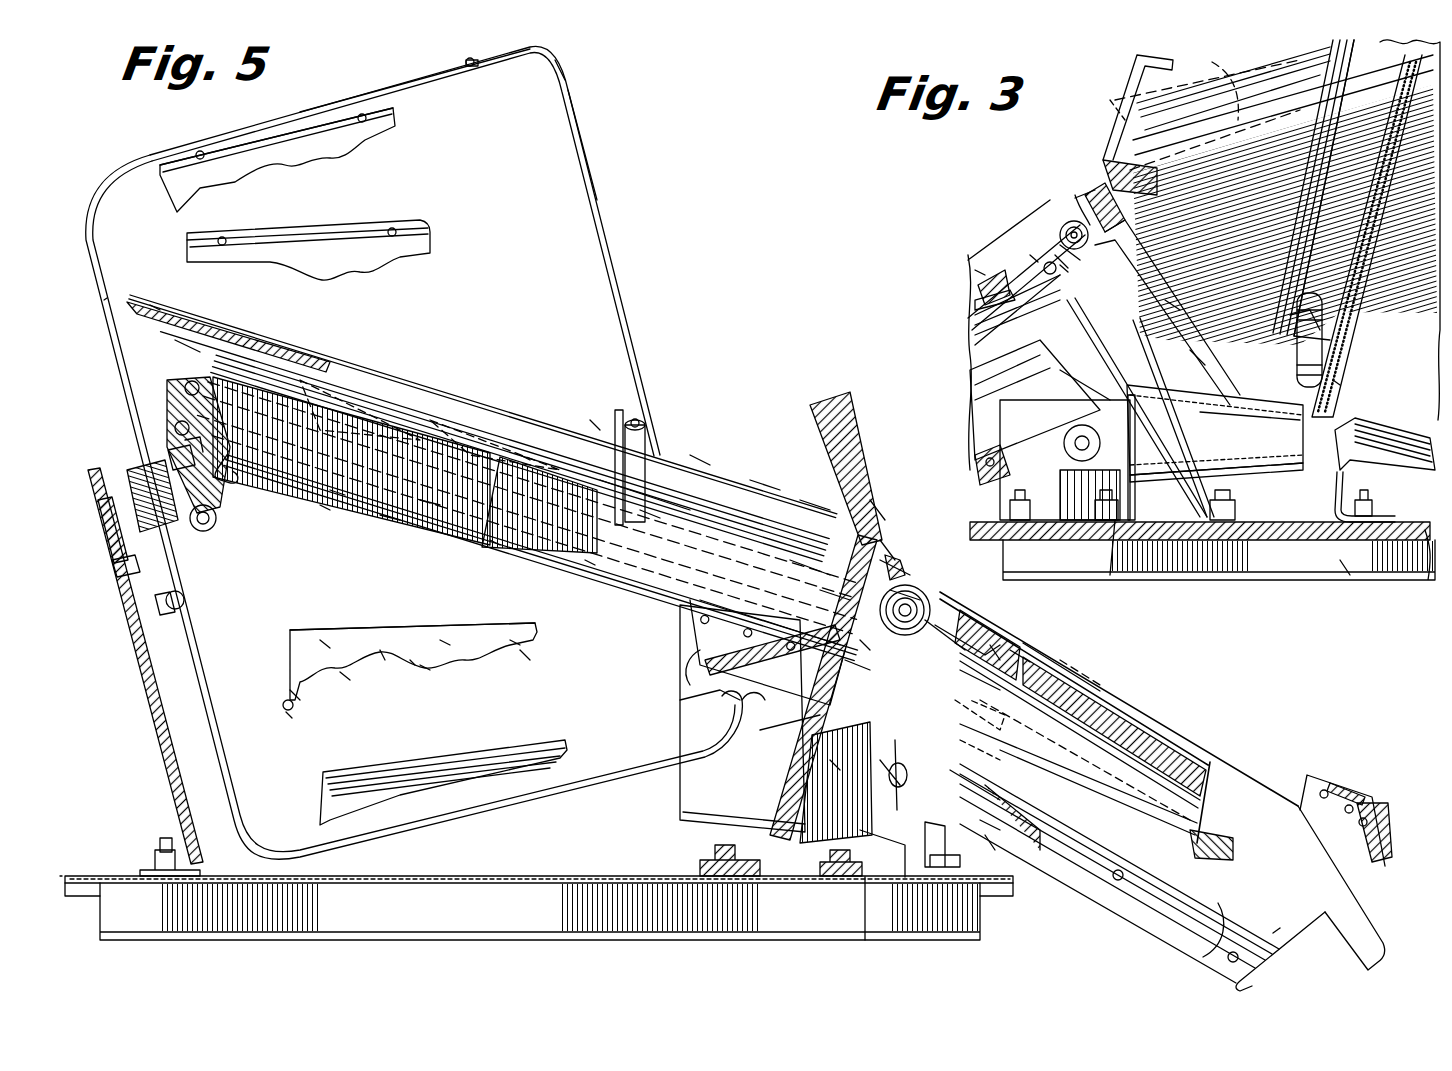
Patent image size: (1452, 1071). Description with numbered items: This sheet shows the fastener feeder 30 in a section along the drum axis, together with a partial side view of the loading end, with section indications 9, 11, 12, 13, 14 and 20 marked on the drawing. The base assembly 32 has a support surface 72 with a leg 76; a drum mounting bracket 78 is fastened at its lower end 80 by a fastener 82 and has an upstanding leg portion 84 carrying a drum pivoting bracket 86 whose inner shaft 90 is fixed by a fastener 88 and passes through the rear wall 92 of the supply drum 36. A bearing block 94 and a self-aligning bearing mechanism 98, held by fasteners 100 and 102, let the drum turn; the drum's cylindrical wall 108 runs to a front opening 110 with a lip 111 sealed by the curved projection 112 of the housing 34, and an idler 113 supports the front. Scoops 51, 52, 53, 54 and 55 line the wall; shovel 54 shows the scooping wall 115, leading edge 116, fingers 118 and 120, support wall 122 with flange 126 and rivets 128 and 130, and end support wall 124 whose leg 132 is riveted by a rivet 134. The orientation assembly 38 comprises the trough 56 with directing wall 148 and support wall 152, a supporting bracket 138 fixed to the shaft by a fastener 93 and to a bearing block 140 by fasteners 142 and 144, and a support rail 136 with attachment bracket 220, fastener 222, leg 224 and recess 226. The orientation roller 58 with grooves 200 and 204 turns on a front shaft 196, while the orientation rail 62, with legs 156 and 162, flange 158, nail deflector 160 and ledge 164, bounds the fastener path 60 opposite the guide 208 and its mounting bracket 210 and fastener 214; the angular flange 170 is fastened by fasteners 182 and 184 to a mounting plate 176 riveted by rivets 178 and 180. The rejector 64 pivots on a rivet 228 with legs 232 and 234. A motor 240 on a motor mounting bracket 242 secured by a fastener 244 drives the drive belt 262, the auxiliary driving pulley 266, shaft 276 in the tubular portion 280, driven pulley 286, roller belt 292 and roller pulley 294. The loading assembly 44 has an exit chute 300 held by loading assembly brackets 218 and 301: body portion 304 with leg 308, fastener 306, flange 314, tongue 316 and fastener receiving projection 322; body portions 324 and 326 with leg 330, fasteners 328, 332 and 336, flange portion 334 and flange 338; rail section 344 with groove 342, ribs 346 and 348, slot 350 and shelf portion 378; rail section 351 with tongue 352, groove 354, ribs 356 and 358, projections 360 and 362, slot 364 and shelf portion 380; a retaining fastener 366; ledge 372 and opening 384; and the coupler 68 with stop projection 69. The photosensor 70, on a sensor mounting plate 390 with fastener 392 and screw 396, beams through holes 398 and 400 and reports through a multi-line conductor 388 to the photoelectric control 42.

In FIG. 5, the section line 9 is at (300, 303).
In FIG. 5, the section line 11 is at (818, 474).
In FIG. 5, the section line 12 is at (700, 470).
In FIG. 5, the section line 13 is at (1025, 624).
In FIG. 5, the section line 14 is at (680, 565).
In FIG. 5, the section line 20 is at (126, 260).
In FIG. 5, the feeder 30 is at (660, 152).
In FIG. 5, the base assembly 32 is at (96, 862).
In FIG. 3, the base assembly 32 is at (1340, 595).
In FIG. 5, the housing 34 is at (840, 400).
In FIG. 3, the housing 34 is at (1137, 52).
In FIG. 5, the supply drum 36 is at (388, 88).
In FIG. 3, the supply drum 36 is at (1395, 58).
In FIG. 5, the orientation assembly 38 is at (512, 312).
In FIG. 3, the orientation assembly 38 is at (1302, 52).
In FIG. 5, the photoelectric control 42 is at (705, 830).
In FIG. 3, the photoelectric control 42 is at (1275, 470).
In FIG. 5, the loading assembly 44 is at (1230, 718).
In FIG. 3, the loading assembly 44 is at (974, 188).
In FIG. 5, the scoop 51 is at (368, 160).
In FIG. 5, the scoop 52 is at (415, 262).
In FIG. 5, the scoop 53 is at (290, 510).
In FIG. 5, the shovel 54 is at (402, 605).
In FIG. 5, the scoop 55 is at (420, 755).
In FIG. 5, the trough 56 is at (120, 313).
In FIG. 5, the orientation roller 58 is at (755, 470).
In FIG. 3, the orientation roller 58 is at (1212, 62).
In FIG. 5, the fastener path 60 is at (386, 461).
In FIG. 5, the orientation rail 62 is at (495, 450).
In FIG. 5, the rejector 64 is at (660, 450).
In FIG. 5, the coupler 68 is at (1348, 786).
In FIG. 5, the stop projection 69 is at (1392, 805).
In FIG. 5, the photosensor 70 is at (918, 605).
In FIG. 3, the photosensor 70 is at (1068, 222).
In FIG. 5, the support surface 72 is at (252, 875).
In FIG. 3, the support surface 72 is at (1405, 575).
In FIG. 5, the leg 76 is at (615, 933).
In FIG. 3, the leg 76 is at (1330, 572).
In FIG. 5, the drum mounting bracket 78 is at (155, 752).
In FIG. 5, the lower end 80 is at (150, 870).
In FIG. 5, the fastener 82 is at (162, 838).
In FIG. 5, the upstanding leg portion 84 is at (160, 720).
In FIG. 5, the drum pivoting bracket 86 is at (98, 462).
In FIG. 5, the fastener 88 is at (98, 535).
In FIG. 5, the inner shaft 90 is at (195, 532).
In FIG. 5, the rear wall 92 is at (215, 712).
In FIG. 5, the fastener 93 is at (222, 538).
In FIG. 5, the bearing block 94 is at (115, 570).
In FIG. 5, the self-aligning bearing mechanism 98 is at (127, 488).
In FIG. 5, the fastener 100 is at (165, 450).
In FIG. 5, the fastener 102 is at (158, 615).
In FIG. 5, the cylindrical wall 108 is at (545, 812).
In FIG. 3, the cylindrical wall 108 is at (1310, 440).
In FIG. 5, the opening 110 is at (583, 112).
In FIG. 5, the lip 111 is at (576, 85).
In FIG. 5, the curved projection 112 is at (690, 695).
In FIG. 3, the idler 113 is at (1250, 413).
In FIG. 5, the scooping wall 115 is at (385, 655).
In FIG. 5, the leading edge 116 is at (418, 660).
In FIG. 5, the finger 118 is at (350, 685).
In FIG. 5, the finger 120 is at (450, 660).
In FIG. 5, the support wall 122 is at (520, 650).
In FIG. 5, the end support wall 124 is at (290, 675).
In FIG. 5, the flange 126 is at (445, 630).
In FIG. 5, the rivet 128 is at (328, 630).
In FIG. 5, the rivet 130 is at (500, 628).
In FIG. 5, the leg 132 is at (290, 712).
In FIG. 5, the rivet 134 is at (283, 706).
In FIG. 5, the support rail 136 is at (418, 355).
In FIG. 3, the support rail 136 is at (1272, 75).
In FIG. 5, the supporting bracket 138 is at (225, 508).
In FIG. 5, the bearing block 140 is at (165, 300).
In FIG. 5, the fastener 142 is at (185, 386).
In FIG. 5, the fastener 144 is at (175, 428).
In FIG. 5, the directing wall 148 is at (148, 322).
In FIG. 5, the support wall 152 is at (425, 500).
In FIG. 5, the leg 156 is at (390, 515).
In FIG. 5, the flange 158 is at (695, 635).
In FIG. 5, the nail deflector 160 is at (690, 670).
In FIG. 5, the leg 162 is at (515, 540).
In FIG. 5, the ledge 164 is at (540, 450).
In FIG. 5, the angular flange 170 is at (830, 582).
In FIG. 5, the mounting plate 176 is at (800, 648).
In FIG. 5, the rivet 178 is at (830, 500).
In FIG. 5, the rivet 180 is at (760, 725).
In FIG. 5, the fastener 182 is at (790, 560).
In FIG. 5, the fastener 184 is at (745, 605).
In FIG. 5, the front shaft 196 is at (890, 560).
In FIG. 3, the front shaft 196 is at (1072, 198).
In FIG. 3, the groove 200 is at (1335, 118).
In FIG. 5, the groove 204 is at (588, 560).
In FIG. 5, the guide 208 is at (330, 485).
In FIG. 3, the guide 208 is at (1290, 330).
In FIG. 3, the mounting bracket 210 is at (1170, 300).
In FIG. 3, the fastener 214 is at (1290, 300).
In FIG. 3, the loading assembly bracket 218 is at (1115, 575).
In FIG. 5, the attachment bracket 220 is at (875, 500).
In FIG. 3, the attachment bracket 220 is at (1120, 120).
In FIG. 3, the fastener 222 is at (1215, 170).
In FIG. 5, the leg 224 is at (560, 420).
In FIG. 5, the recess 226 is at (705, 450).
In FIG. 3, the recess 226 is at (1338, 88).
In FIG. 5, the rivet 228 is at (640, 418).
In FIG. 5, the leg 232 is at (655, 515).
In FIG. 5, the projecting leg 234 is at (612, 405).
In FIG. 3, the motor 240 is at (1425, 468).
In FIG. 3, the motor mounting bracket 242 is at (1335, 485).
In FIG. 3, the fastener 244 is at (1360, 493).
In FIG. 5, the drive belt 262 is at (470, 56).
In FIG. 3, the drive belt 262 is at (1362, 310).
In FIG. 3, the auxiliary driving pulley 266 is at (1335, 375).
In FIG. 3, the shaft 276 is at (1030, 262).
In FIG. 5, the tubular portion 280 is at (735, 735).
In FIG. 3, the tubular portion 280 is at (1195, 350).
In FIG. 3, the driven pulley 286 is at (1075, 345).
In FIG. 5, the roller belt 292 is at (880, 540).
In FIG. 3, the roller belt 292 is at (1090, 192).
In FIG. 5, the roller pulley 294 is at (895, 555).
In FIG. 3, the roller pulley 294 is at (1075, 195).
In FIG. 5, the exit chute 300 is at (1165, 738).
In FIG. 3, the exit chute 300 is at (960, 362).
In FIG. 5, the loading assembly bracket 301 is at (1005, 870).
In FIG. 3, the body portion 304 is at (1050, 260).
In FIG. 3, the fastener 306 is at (1025, 500).
In FIG. 3, the leg 308 is at (1045, 515).
In FIG. 3, the flange 314 is at (1140, 400).
In FIG. 3, the tongue 316 is at (1010, 330).
In FIG. 3, the fastener receiving projection 322 is at (1065, 452).
In FIG. 5, the body portion 324 is at (865, 940).
In FIG. 5, the body portion 326 is at (905, 590).
In FIG. 5, the fastener 328 is at (862, 685).
In FIG. 5, the leg 330 is at (860, 700).
In FIG. 5, the fastener 332 is at (845, 776).
In FIG. 5, the flange portion 334 is at (815, 798).
In FIG. 5, the fastener 336 is at (965, 855).
In FIG. 5, the flange 338 is at (870, 825).
In FIG. 3, the groove 342 is at (978, 290).
In FIG. 5, the rail section 344 is at (1273, 933).
In FIG. 3, the rail section 344 is at (970, 388).
In FIG. 3, the rib 346 is at (975, 285).
In FIG. 3, the rib 348 is at (975, 320).
In FIG. 3, the slot 350 is at (975, 468).
In FIG. 5, the rail section 351 is at (1125, 936).
In FIG. 5, the tongue 352 is at (1000, 637).
In FIG. 5, the groove 354 is at (1098, 704).
In FIG. 5, the rib 356 is at (1045, 668).
In FIG. 5, the rib 358 is at (1050, 712).
In FIG. 5, the projection 360 is at (965, 738).
In FIG. 5, the projection 362 is at (970, 790).
In FIG. 5, the slot 364 is at (1095, 878).
In FIG. 5, the retaining fastener 366 is at (900, 805).
In FIG. 5, the ledge 372 is at (960, 615).
In FIG. 5, the shelf portion 378 is at (1245, 784).
In FIG. 5, the shelf portion 380 is at (1100, 662).
In FIG. 5, the opening 384 is at (1203, 957).
In FIG. 3, the multi-line conductor 388 is at (1060, 392).
In FIG. 3, the sensor mounting plate 390 is at (1055, 248).
In FIG. 5, the fastener 392 is at (945, 690).
In FIG. 3, the screw 396 is at (1052, 258).
In FIG. 5, the hole 398 is at (975, 710).
In FIG. 5, the hole 400 is at (985, 635).